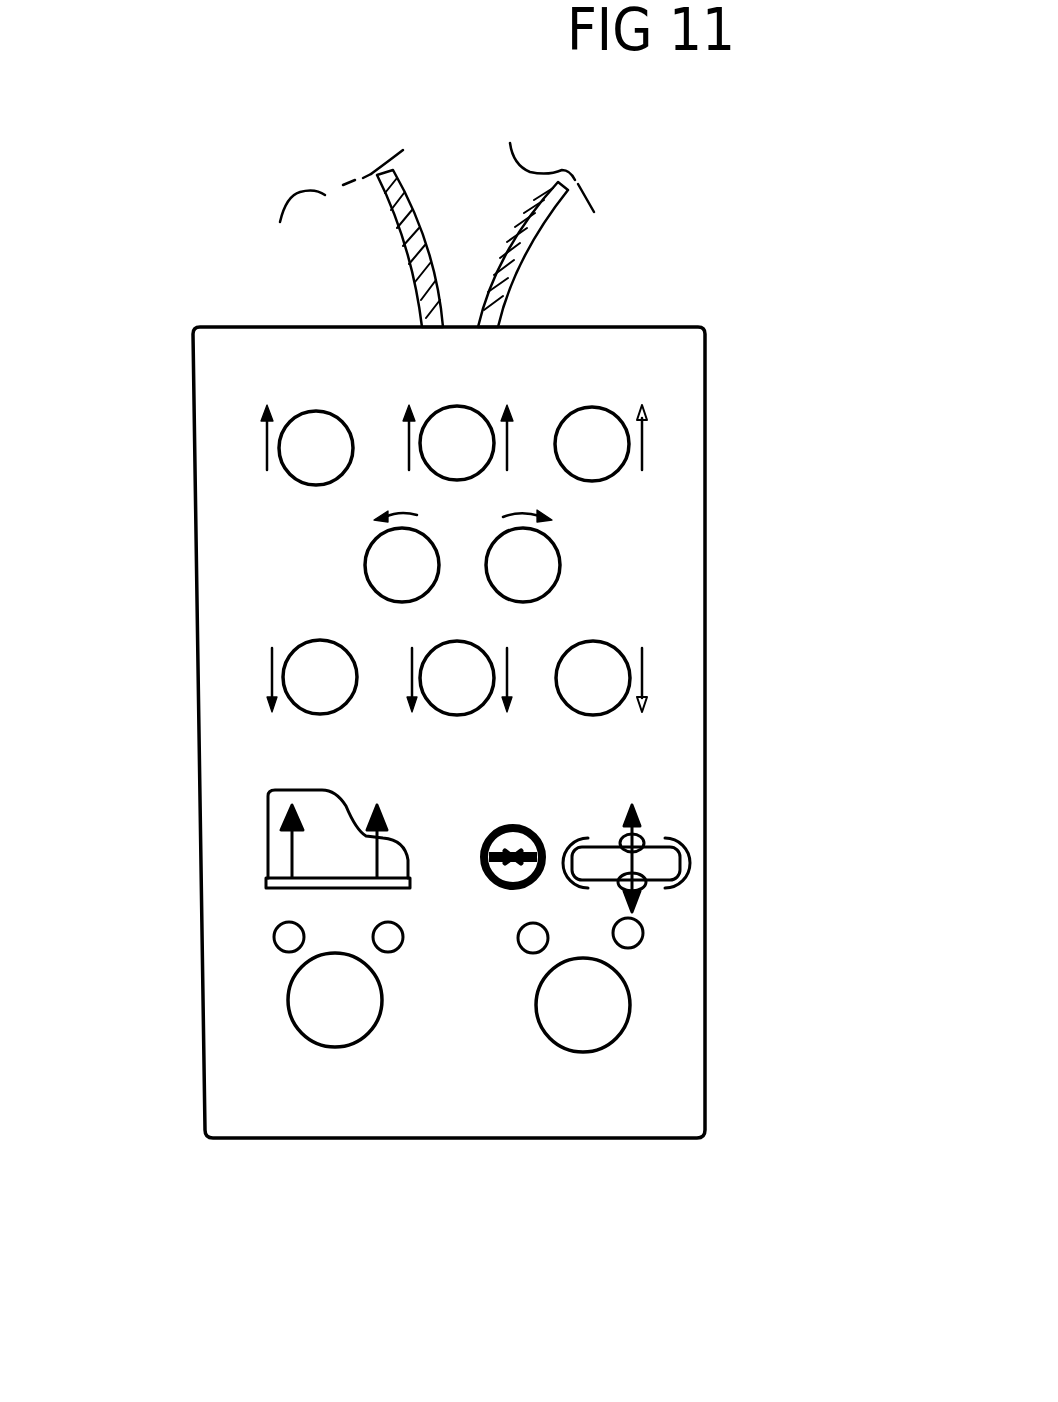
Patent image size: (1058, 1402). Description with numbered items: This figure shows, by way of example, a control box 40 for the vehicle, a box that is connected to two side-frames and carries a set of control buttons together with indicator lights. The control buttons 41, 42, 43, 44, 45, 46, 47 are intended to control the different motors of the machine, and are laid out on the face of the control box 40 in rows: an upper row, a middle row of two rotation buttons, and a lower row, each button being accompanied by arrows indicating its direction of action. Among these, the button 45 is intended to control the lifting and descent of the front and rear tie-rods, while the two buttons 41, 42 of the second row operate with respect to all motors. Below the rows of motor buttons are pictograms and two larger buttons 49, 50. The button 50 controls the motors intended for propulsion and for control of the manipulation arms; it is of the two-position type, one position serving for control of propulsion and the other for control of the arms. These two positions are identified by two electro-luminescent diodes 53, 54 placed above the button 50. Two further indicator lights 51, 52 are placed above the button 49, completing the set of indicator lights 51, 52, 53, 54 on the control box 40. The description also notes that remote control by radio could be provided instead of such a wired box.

The control box 40 is at (787, 392).
The control button 41 is at (297, 462).
The control button 42 is at (467, 468).
The control button 43 is at (605, 457).
The control button 44 is at (380, 567).
The control button 45 is at (538, 563).
The control button 46 is at (313, 685).
The control button 47 is at (465, 705).
The control button 49 is at (310, 992).
The control button 50 is at (595, 1018).
The indicator light 51 is at (283, 935).
The indicator light 52 is at (397, 943).
The electro-luminescent diode 53 is at (532, 942).
The electro-luminescent diode 54 is at (634, 937).